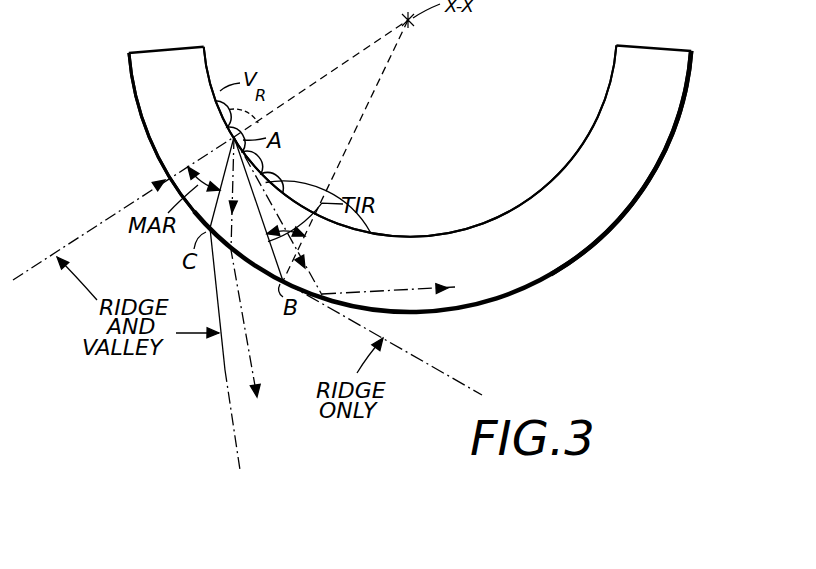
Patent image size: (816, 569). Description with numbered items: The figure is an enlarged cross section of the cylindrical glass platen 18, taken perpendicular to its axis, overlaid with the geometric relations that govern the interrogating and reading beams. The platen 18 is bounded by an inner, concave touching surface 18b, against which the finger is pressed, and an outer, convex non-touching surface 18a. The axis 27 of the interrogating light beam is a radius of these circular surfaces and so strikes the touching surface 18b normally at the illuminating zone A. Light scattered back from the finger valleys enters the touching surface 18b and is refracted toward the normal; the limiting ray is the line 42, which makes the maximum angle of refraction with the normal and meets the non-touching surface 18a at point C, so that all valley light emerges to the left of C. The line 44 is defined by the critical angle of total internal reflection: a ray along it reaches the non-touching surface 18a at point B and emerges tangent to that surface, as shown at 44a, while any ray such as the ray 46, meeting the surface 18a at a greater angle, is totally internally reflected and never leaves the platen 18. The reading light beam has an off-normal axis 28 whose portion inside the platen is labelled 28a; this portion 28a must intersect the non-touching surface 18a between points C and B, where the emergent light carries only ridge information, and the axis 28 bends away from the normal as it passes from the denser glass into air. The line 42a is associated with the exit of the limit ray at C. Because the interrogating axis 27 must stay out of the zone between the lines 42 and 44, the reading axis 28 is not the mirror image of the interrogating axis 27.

The platen 18 is at (180, 31).
The non-touching surface 18a is at (137, 95).
The touching surface 18b is at (206, 63).
The axis of the interrogating light beam 27 is at (124, 212).
The axis of the reading light beam 28 is at (250, 351).
The reading axis portion within the platen 28a is at (232, 241).
The line defining the maximum angle of refraction 42 is at (228, 138).
The ray exiting at C 42a is at (217, 289).
The line defined by the TIR angle 44 is at (333, 196).
The tangent emergence of ray along line 44 44a is at (470, 392).
The TIR ray 46 is at (392, 290).